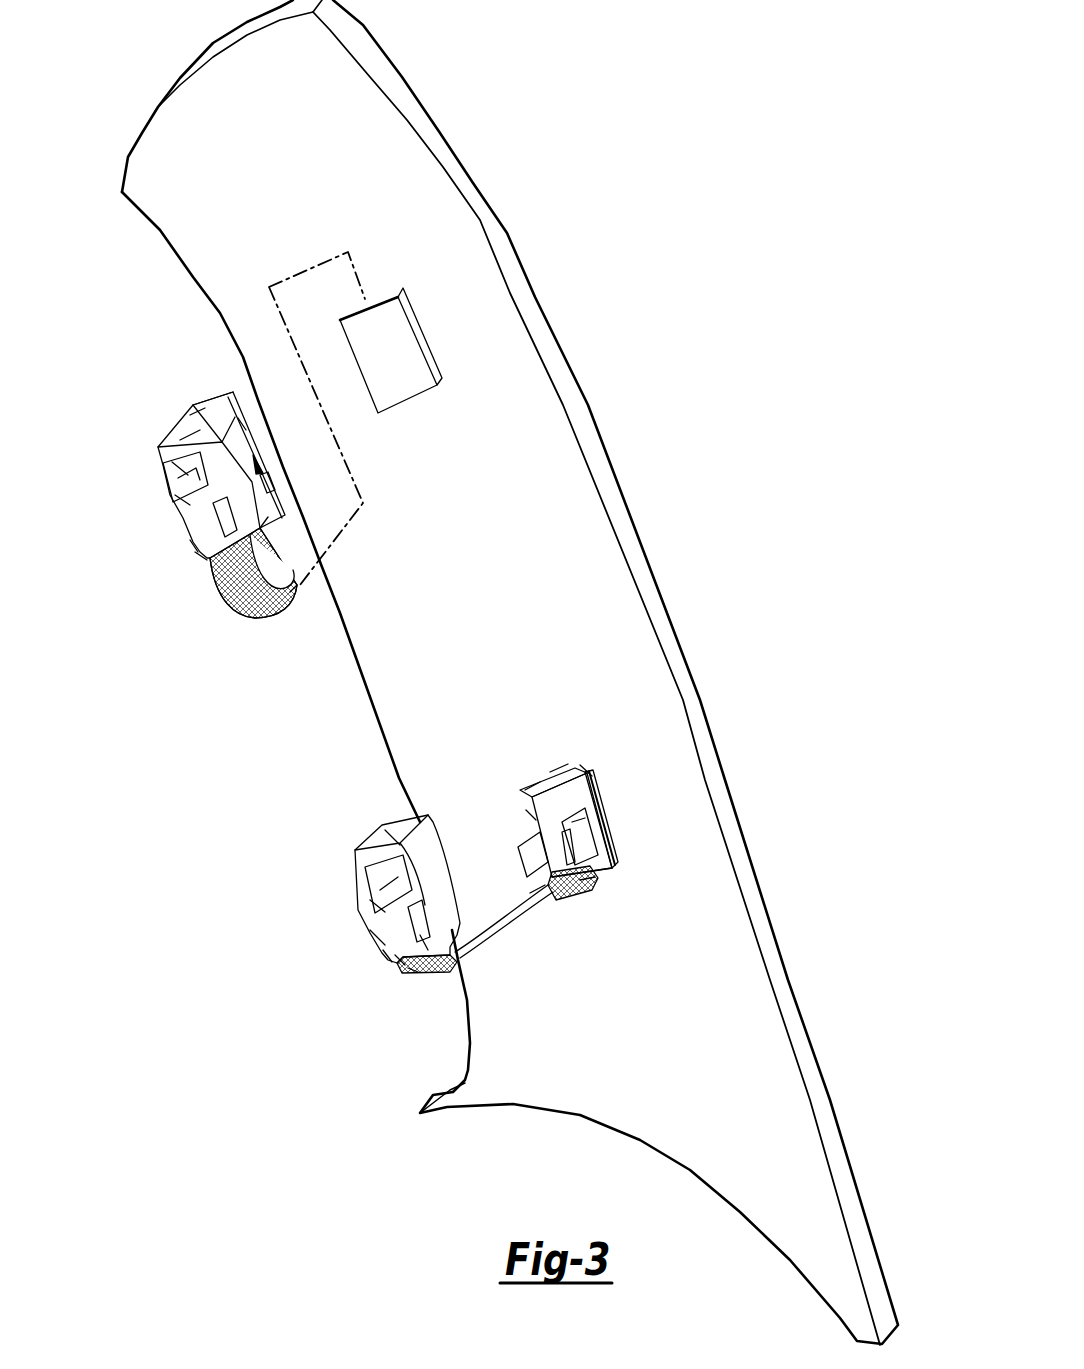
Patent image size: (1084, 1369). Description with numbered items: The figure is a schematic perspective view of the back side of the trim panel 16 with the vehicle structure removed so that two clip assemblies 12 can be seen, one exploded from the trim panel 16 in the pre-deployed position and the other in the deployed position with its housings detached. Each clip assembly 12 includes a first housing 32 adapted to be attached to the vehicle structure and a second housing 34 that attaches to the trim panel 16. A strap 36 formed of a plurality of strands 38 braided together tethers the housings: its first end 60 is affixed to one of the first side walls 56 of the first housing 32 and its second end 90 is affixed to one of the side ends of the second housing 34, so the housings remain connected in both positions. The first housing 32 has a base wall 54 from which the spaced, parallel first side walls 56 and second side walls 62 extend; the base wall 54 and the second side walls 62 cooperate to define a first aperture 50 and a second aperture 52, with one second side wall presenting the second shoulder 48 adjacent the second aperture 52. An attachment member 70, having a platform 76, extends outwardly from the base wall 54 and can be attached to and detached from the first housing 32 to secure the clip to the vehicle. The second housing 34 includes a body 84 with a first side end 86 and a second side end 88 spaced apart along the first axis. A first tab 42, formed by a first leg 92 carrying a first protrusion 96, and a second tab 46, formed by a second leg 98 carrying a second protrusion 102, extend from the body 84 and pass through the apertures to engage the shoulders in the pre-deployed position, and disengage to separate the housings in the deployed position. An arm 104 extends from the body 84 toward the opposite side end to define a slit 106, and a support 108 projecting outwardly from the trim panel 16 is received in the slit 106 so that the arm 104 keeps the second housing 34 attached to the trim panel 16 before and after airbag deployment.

The clip assembly 12 is at (376, 690).
The trim panel 16 is at (540, 395).
The first housing 32 is at (180, 468).
The second housing 34 is at (217, 397).
The strap 36 is at (292, 592).
The strands 38 is at (255, 598).
The first tab 42 is at (533, 835).
The second tab 46 is at (252, 540).
The second shoulder 48 is at (427, 917).
The first aperture 50 is at (186, 544).
The second aperture 52 is at (209, 519).
The base wall 54 is at (198, 557).
The first side walls 56 is at (180, 433).
The first end 60 is at (292, 580).
The second side walls 62 is at (235, 437).
The attachment member 70 is at (177, 510).
The platform 76 is at (183, 467).
The body 84 is at (240, 415).
The first side end 86 is at (610, 863).
The second side end 88 is at (198, 410).
The second end 90 is at (265, 515).
The first leg 92 is at (533, 887).
The first protrusion 96 is at (525, 867).
The second leg 98 is at (597, 838).
The second protrusion 102 is at (562, 840).
The arm 104 is at (267, 447).
The slit 106 is at (262, 472).
The support 108 is at (402, 350).